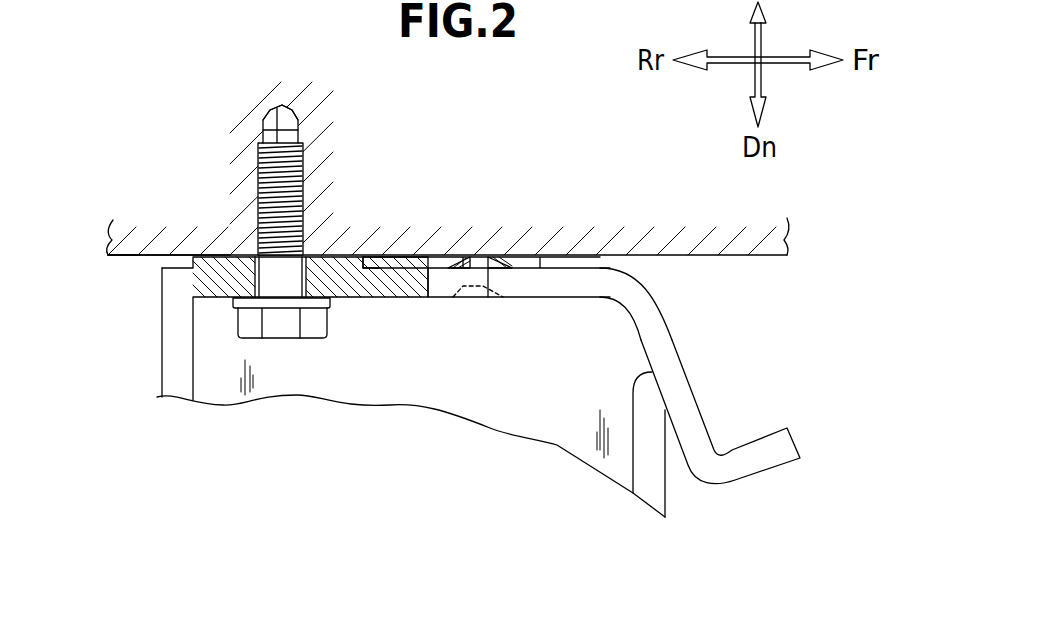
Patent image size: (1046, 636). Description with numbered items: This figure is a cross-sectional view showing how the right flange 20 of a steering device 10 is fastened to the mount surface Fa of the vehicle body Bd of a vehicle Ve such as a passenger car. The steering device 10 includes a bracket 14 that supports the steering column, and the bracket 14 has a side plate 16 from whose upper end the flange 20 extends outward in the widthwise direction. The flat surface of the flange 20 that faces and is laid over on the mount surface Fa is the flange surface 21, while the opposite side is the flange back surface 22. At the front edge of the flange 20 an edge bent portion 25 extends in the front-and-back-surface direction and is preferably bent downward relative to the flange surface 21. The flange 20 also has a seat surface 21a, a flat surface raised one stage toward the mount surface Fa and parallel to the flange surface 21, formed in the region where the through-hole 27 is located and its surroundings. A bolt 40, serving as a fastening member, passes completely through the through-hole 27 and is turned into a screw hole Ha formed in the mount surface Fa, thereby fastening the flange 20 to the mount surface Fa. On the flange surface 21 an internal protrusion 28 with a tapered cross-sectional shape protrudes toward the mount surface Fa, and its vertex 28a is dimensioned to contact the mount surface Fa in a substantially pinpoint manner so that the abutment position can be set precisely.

The steering device 10 is at (195, 470).
The bracket 14 is at (545, 443).
The side plate 16 is at (453, 383).
The flange 20 is at (232, 272).
The flange surface 21 is at (535, 256).
The seat surface 21a is at (342, 256).
The flange back surface 22 is at (521, 298).
The edge bent portion 25 is at (641, 282).
The through-hole 27 is at (266, 292).
The internal protrusion 28 is at (453, 258).
The vertex 28a is at (471, 257).
The bolt 40 is at (315, 320).
The vehicle Ve is at (150, 110).
The vehicle body Bd is at (112, 240).
The mount surface Fa is at (127, 258).
The screw hole Ha is at (282, 113).